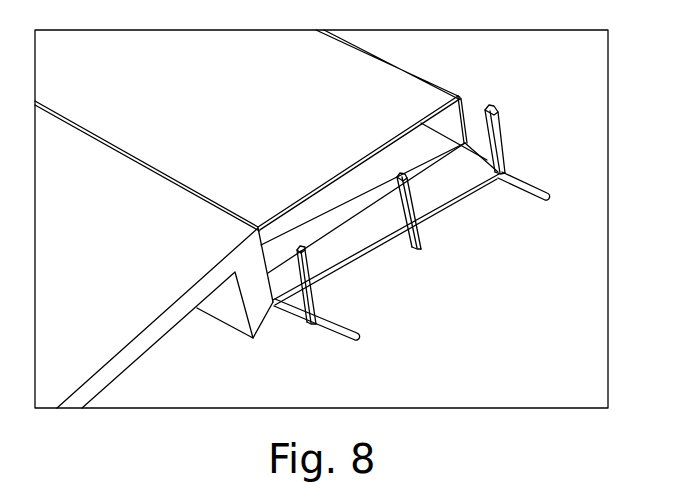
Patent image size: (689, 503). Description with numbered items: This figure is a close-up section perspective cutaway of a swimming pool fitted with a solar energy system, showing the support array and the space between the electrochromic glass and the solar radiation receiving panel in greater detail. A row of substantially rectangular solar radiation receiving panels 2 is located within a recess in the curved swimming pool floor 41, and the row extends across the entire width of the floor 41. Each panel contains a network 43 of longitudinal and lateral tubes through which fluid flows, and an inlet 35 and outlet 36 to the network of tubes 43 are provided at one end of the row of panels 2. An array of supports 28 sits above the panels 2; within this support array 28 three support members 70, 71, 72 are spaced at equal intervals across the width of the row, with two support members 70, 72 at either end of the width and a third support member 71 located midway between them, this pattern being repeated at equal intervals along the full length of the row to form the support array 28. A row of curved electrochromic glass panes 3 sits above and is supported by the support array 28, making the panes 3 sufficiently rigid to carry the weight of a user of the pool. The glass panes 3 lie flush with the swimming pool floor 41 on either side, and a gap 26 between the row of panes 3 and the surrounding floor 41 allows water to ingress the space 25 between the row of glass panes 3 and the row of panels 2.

The solar radiation receiving panel 2 is at (387, 206).
The electrochromic glass pane 3 is at (248, 137).
The space 25 is at (421, 176).
The gap 26 is at (220, 207).
The support array 28 is at (506, 138).
The inlet 35 is at (540, 203).
The outlet 36 is at (357, 339).
The swimming pool floor 41 is at (125, 305).
The network of tubes 43 is at (369, 154).
The support member 70 is at (300, 316).
The support member 71 is at (416, 232).
The support member 72 is at (537, 144).